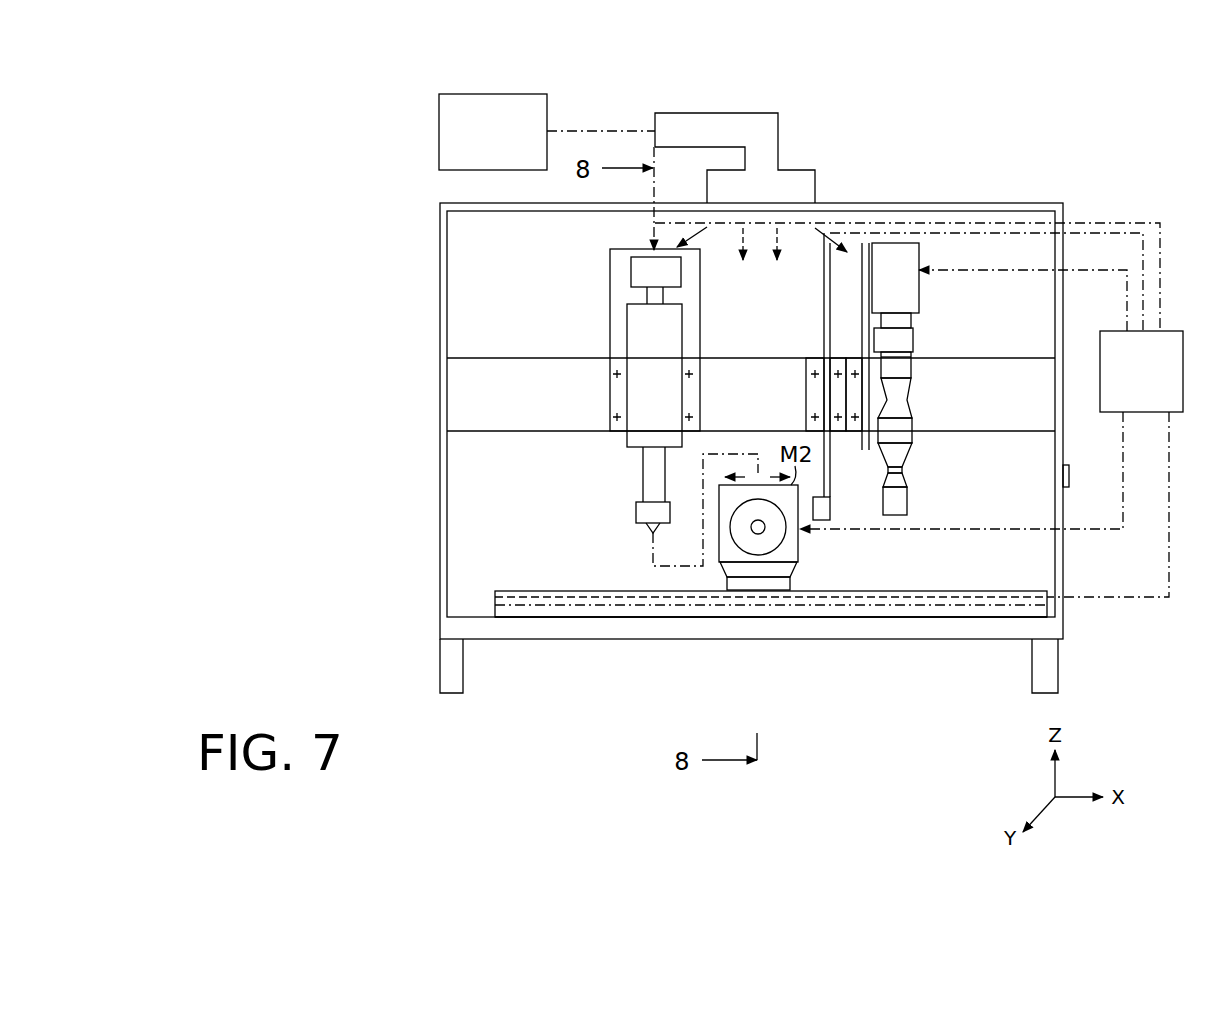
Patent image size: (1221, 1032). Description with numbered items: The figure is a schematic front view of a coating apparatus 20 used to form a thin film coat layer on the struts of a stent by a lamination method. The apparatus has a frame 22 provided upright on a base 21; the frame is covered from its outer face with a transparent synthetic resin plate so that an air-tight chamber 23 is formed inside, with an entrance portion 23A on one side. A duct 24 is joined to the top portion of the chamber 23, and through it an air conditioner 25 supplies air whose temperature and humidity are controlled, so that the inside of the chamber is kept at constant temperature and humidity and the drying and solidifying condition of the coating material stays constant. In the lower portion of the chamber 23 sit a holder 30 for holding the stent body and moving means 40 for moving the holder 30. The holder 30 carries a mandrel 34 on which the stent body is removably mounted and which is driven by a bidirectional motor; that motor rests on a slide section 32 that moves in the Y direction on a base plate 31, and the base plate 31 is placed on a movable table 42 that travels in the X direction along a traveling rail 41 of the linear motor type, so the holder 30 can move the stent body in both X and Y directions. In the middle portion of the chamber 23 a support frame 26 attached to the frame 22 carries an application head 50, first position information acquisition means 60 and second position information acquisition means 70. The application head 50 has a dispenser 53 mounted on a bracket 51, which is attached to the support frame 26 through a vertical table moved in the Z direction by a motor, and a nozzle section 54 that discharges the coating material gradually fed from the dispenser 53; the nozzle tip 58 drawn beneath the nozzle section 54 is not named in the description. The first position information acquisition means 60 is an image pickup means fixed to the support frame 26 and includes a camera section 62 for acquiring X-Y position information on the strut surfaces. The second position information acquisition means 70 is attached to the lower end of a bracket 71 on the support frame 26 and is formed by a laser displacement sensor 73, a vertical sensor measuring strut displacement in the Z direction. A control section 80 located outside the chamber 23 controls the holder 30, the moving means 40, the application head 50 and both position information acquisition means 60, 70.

The coating apparatus 20 is at (376, 212).
The base 21 is at (558, 628).
The frame 22 is at (445, 414).
The chamber 23 is at (457, 311).
The entrance portion 23A is at (1060, 510).
The duct 24 is at (716, 113).
The air conditioner 25 is at (494, 94).
The support frame 26 is at (535, 370).
The holder 30 is at (715, 530).
The base plate 31 is at (723, 573).
The slide section 32 is at (767, 567).
The mandrel 34 is at (765, 531).
The moving means 40 is at (802, 552).
The traveling rail 41 is at (975, 612).
The movable table 42 is at (737, 605).
The application head 50 is at (560, 465).
The bracket 51 is at (700, 305).
The dispenser 53 is at (645, 437).
The nozzle section 54 is at (643, 512).
The nozzle 58 is at (650, 527).
The first position information acquisition means 60 is at (918, 350).
The camera section 62 is at (900, 392).
The second position information acquisition means 70 is at (806, 402).
The bracket 71 is at (830, 478).
The laser displacement sensor 73 is at (830, 505).
The control section 80 is at (1156, 384).